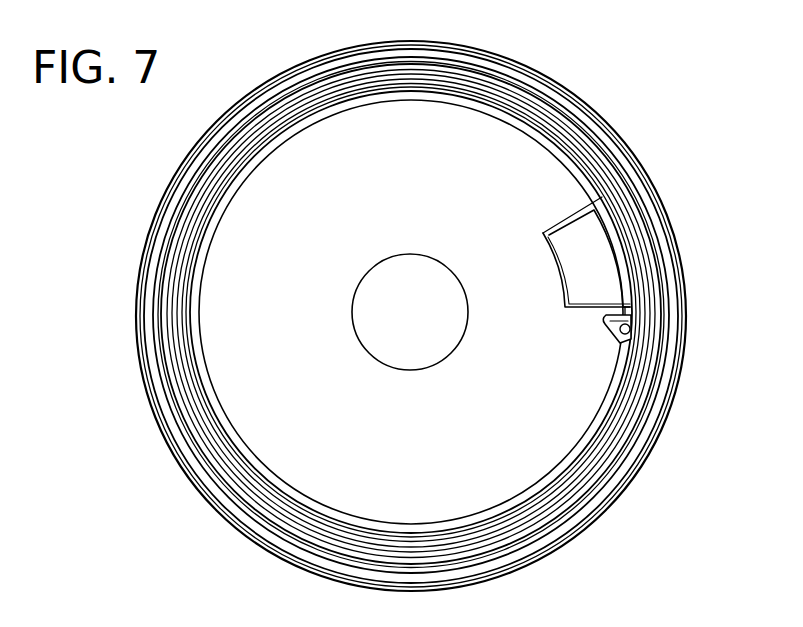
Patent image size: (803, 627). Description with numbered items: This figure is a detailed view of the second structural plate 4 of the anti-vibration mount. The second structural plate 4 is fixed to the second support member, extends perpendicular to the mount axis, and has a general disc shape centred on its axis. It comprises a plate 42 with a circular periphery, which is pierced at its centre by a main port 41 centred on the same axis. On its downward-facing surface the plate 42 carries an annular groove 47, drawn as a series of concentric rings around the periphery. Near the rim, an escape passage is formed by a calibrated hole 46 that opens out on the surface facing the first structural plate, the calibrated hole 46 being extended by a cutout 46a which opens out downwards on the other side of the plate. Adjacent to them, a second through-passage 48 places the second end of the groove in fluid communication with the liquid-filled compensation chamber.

The second structural plate 4 is at (406, 316).
The main port 41 is at (405, 316).
The plate 42 is at (277, 356).
The calibrated hole 46 is at (681, 344).
The cutout 46a is at (620, 330).
The annular groove 47 is at (208, 445).
The second through-passage 48 is at (615, 248).